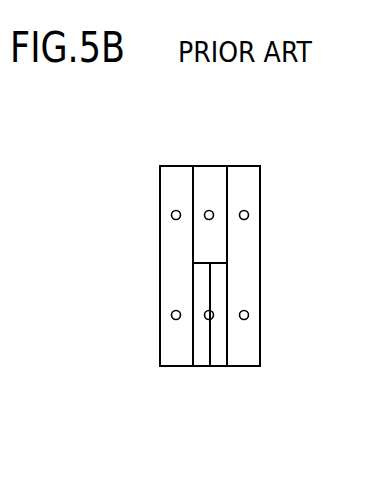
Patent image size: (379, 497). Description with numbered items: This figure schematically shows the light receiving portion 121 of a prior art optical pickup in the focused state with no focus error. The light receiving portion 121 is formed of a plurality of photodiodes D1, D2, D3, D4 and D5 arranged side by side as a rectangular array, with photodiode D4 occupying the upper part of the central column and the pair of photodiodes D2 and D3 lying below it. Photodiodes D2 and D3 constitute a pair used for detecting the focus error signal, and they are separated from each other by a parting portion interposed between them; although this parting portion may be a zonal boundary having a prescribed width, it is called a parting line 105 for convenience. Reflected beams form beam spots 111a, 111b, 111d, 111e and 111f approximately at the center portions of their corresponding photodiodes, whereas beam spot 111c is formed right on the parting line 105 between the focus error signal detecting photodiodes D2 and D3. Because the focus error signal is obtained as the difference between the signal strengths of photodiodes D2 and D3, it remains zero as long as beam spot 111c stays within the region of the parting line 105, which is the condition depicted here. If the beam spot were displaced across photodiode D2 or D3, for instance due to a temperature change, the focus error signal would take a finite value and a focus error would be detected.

The light receiving portion 121 is at (174, 166).
The parting line 105 is at (212, 272).
The beam spot 111a is at (171, 315).
The beam spot 111b is at (171, 215).
The beam spot 111c is at (206, 312).
The beam spot 111d is at (206, 212).
The beam spot 111e is at (249, 315).
The beam spot 111f is at (249, 215).
The photodiode D1 is at (174, 356).
The photodiode D2 is at (200, 356).
The photodiode D3 is at (216, 356).
The photodiode D4 is at (213, 178).
The photodiode D5 is at (244, 356).